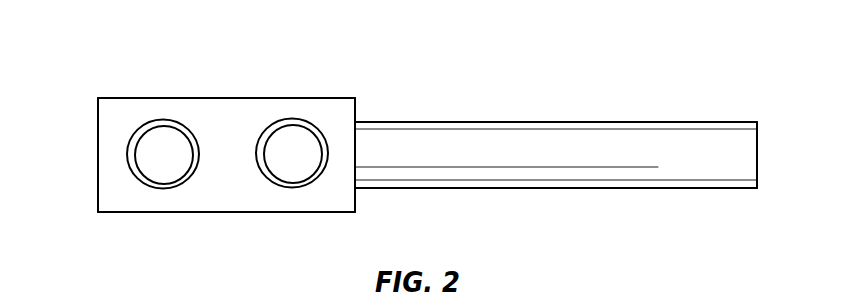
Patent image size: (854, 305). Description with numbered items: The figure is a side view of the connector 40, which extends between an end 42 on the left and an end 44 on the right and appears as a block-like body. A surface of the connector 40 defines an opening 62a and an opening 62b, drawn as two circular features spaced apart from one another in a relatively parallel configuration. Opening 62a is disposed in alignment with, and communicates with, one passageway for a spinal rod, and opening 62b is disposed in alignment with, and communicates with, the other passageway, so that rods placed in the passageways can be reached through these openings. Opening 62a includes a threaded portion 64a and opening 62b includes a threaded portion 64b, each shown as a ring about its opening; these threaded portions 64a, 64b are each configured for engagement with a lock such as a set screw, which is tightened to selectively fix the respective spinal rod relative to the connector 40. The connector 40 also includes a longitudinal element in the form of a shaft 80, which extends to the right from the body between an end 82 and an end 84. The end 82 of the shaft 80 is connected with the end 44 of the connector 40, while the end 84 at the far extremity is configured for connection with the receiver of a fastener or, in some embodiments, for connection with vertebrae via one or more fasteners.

The connector 40 is at (236, 110).
The end 42 is at (97, 193).
The end 44 is at (355, 202).
The opening 62a is at (300, 145).
The opening 62b is at (168, 147).
The threaded portion 64a is at (265, 147).
The threaded portion 64b is at (136, 144).
The shaft 80 is at (578, 142).
The end 82 is at (362, 138).
The end 84 is at (743, 142).